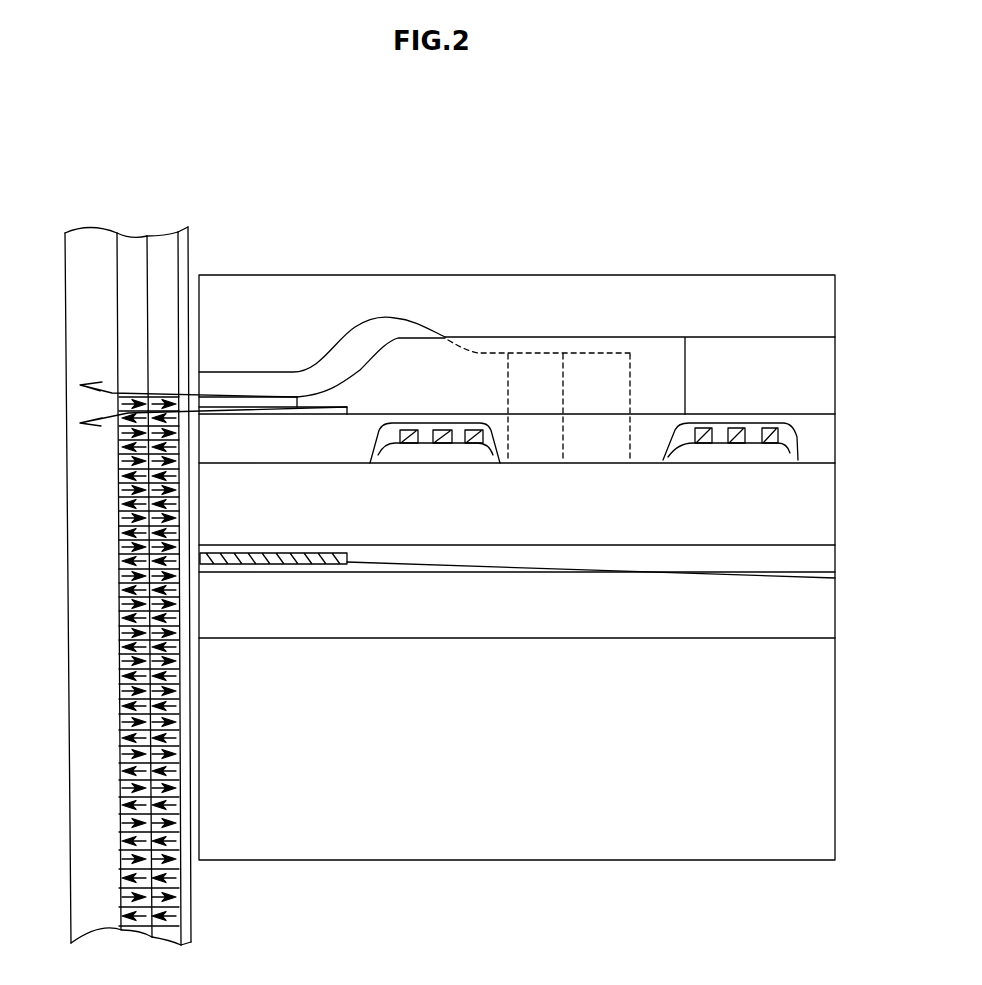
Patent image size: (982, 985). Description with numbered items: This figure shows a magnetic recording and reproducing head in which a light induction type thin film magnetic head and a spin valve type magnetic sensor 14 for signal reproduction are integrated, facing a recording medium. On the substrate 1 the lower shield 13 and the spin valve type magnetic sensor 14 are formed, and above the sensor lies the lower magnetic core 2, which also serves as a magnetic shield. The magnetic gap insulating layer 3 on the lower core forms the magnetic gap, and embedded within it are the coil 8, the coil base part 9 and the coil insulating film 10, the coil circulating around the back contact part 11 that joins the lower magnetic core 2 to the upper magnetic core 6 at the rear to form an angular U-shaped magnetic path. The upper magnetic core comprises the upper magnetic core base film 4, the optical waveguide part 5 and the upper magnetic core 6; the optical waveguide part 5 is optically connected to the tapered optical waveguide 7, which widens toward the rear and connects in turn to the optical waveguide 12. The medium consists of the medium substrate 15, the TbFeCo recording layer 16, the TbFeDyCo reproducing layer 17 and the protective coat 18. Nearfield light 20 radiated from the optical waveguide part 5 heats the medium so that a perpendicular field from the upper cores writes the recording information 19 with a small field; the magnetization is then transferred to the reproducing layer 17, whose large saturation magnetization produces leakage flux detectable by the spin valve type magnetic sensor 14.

The substrate 1 is at (755, 668).
The lower magnetic core 2 is at (750, 498).
The magnetic gap insulating layer 3 is at (812, 437).
The upper magnetic core base film 4 is at (223, 410).
The optical waveguide part 5 is at (267, 403).
The upper magnetic core 6 is at (327, 367).
The tapered optical waveguide 7 is at (365, 387).
The coil 8 is at (410, 440).
The coil base part 9 is at (430, 453).
The coil insulating film 10 is at (457, 430).
The back contact part 11 is at (540, 368).
The optical waveguide 12 is at (745, 375).
The lower shield 13 is at (785, 617).
The spin valve type magnetic sensor 14 is at (835, 578).
The medium substrate 15 is at (92, 262).
The recording layer 16 is at (135, 260).
The reproducing layer 17 is at (162, 257).
The protective coat 18 is at (183, 245).
The recording information 19 is at (170, 928).
The nearfield light 20 is at (211, 393).